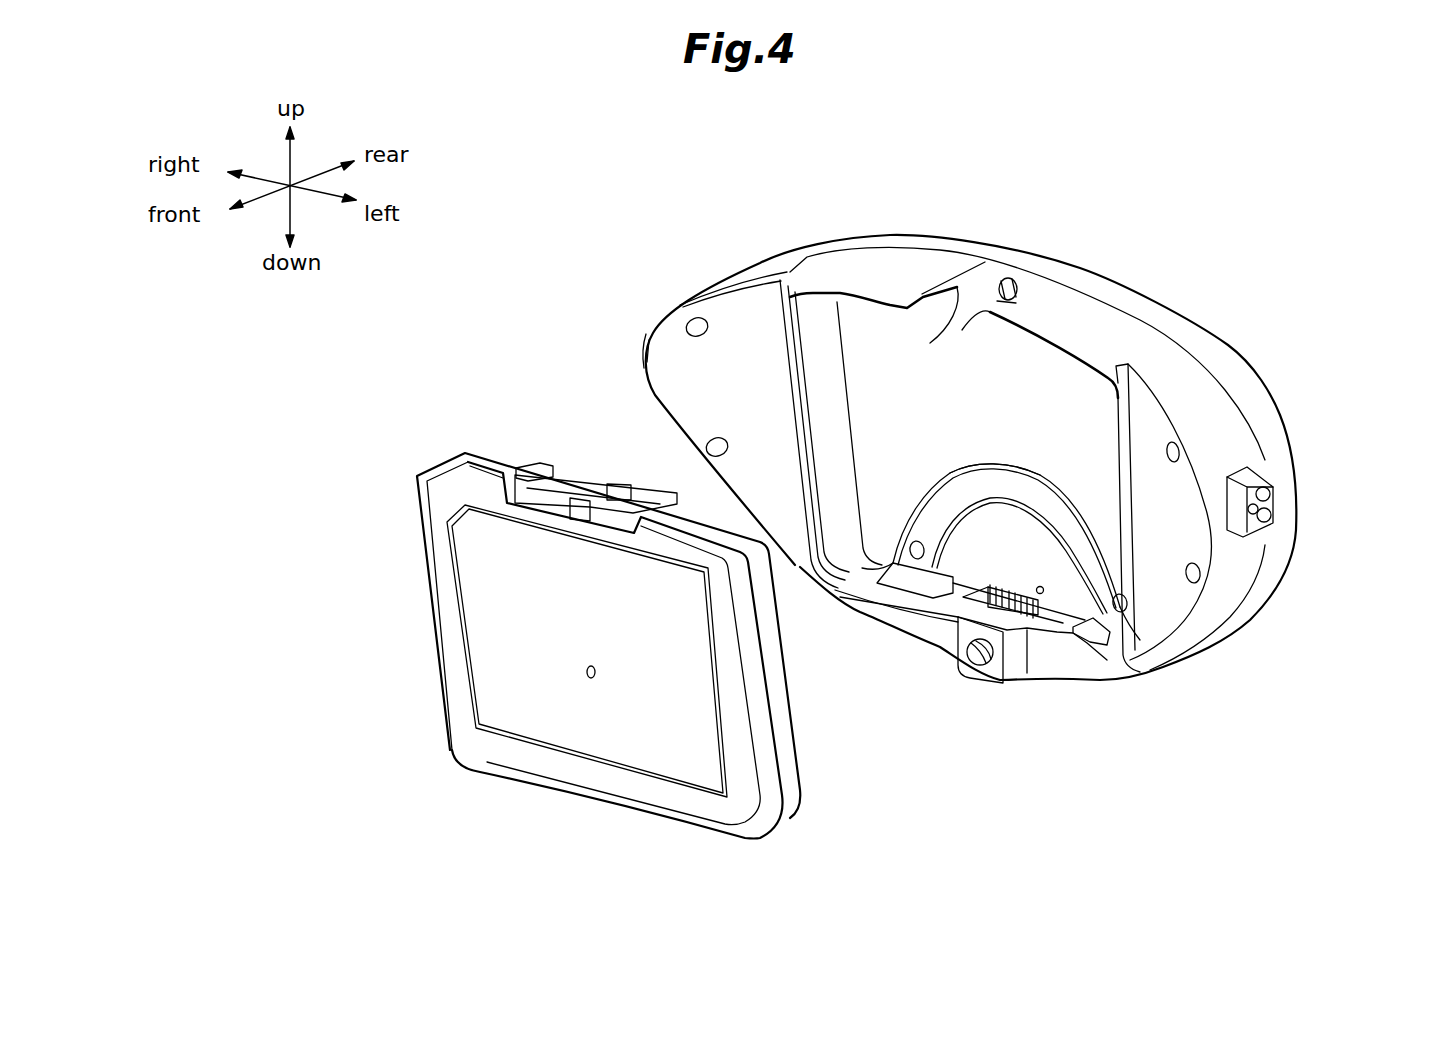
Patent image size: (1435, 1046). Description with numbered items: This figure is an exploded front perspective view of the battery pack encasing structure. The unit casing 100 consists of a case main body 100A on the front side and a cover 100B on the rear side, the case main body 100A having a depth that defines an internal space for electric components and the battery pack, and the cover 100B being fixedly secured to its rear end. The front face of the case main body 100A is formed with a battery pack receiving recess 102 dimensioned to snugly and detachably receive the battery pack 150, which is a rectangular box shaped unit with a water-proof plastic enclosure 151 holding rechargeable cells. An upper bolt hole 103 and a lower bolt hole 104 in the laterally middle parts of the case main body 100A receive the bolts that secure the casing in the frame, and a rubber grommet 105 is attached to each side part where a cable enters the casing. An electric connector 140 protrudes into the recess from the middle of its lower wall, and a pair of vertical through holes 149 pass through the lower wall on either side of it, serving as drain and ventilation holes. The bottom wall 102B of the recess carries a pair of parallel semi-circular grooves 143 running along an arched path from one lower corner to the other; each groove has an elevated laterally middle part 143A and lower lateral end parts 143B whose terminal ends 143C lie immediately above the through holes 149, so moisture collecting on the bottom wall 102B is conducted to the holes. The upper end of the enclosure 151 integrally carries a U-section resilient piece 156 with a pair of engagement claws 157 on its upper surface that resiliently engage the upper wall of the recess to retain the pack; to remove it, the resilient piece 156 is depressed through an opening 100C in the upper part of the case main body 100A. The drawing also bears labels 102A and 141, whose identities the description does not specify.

The unit casing 100 is at (1275, 379).
The case main body 100A is at (1108, 323).
The cover 100B is at (1222, 359).
The opening 100C is at (930, 290).
The battery pack receiving recess 102 is at (860, 351).
The floor plate 102A is at (930, 598).
The bottom wall 102B is at (958, 294).
The bolt hole 103 is at (1009, 279).
The bolt hole 104 is at (996, 673).
The rubber grommet 105 is at (646, 334).
The electric connector 140 is at (980, 602).
The connector 141 is at (1013, 585).
The grooves 143 is at (1072, 552).
The elevated laterally middle part 143A is at (990, 463).
The lower lateral end parts 143B is at (948, 537).
The terminal ends 143C is at (893, 580).
The through holes 149 is at (935, 588).
The battery pack 150 is at (721, 803).
The enclosure 151 is at (795, 805).
The resilient piece 156 is at (579, 483).
The engagement claws 157 is at (535, 468).